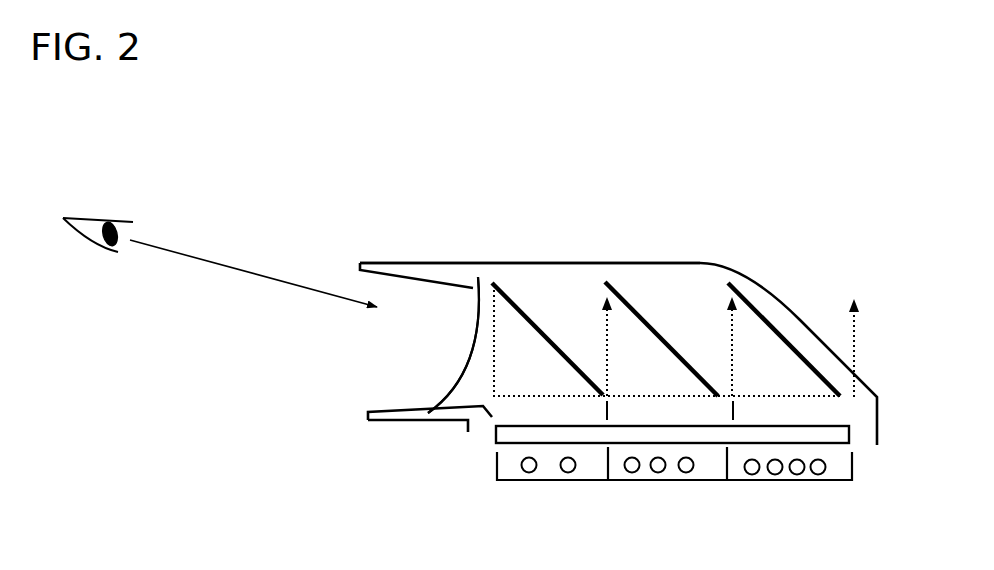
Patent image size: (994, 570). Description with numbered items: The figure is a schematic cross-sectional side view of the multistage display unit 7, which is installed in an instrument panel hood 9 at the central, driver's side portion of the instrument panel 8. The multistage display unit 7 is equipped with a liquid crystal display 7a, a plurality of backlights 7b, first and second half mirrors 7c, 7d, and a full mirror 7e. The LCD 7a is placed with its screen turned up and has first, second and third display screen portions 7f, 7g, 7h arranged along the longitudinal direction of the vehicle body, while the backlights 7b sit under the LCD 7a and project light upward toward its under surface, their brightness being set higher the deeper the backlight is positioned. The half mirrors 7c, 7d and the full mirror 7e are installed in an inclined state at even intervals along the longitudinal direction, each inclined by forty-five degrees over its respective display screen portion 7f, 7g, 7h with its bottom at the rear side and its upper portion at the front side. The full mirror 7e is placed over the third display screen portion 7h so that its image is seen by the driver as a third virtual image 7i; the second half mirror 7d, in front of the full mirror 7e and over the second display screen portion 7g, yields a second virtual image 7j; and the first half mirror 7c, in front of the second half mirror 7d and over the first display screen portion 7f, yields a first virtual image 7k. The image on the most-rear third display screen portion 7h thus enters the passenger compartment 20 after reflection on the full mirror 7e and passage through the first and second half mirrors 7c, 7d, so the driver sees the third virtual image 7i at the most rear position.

The multistage display unit 7 is at (624, 166).
The liquid crystal display 7a is at (851, 441).
The backlights 7b is at (553, 478).
The first half mirror 7c is at (507, 290).
The second half mirror 7d is at (612, 303).
The full mirror 7e is at (762, 305).
The first display screen portion 7f is at (546, 410).
The second display screen portion 7g is at (662, 410).
The third display screen portion 7h is at (831, 420).
The third virtual image 7i is at (856, 337).
The second virtual image 7j is at (731, 340).
The first virtual image 7k is at (606, 342).
The instrument panel 8 is at (375, 379).
The instrument panel hood 9 is at (406, 261).
The passenger compartment 20 is at (336, 330).